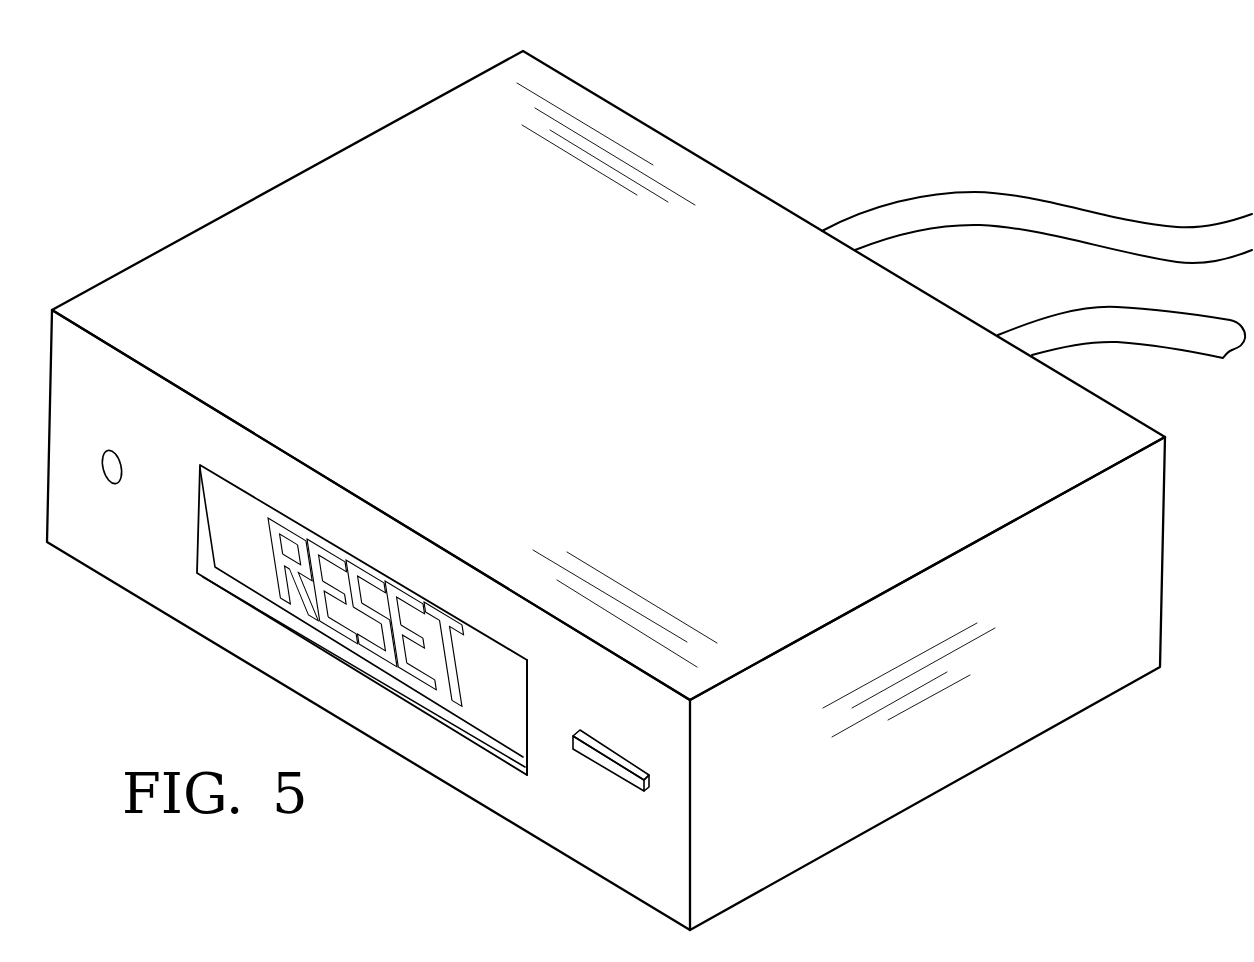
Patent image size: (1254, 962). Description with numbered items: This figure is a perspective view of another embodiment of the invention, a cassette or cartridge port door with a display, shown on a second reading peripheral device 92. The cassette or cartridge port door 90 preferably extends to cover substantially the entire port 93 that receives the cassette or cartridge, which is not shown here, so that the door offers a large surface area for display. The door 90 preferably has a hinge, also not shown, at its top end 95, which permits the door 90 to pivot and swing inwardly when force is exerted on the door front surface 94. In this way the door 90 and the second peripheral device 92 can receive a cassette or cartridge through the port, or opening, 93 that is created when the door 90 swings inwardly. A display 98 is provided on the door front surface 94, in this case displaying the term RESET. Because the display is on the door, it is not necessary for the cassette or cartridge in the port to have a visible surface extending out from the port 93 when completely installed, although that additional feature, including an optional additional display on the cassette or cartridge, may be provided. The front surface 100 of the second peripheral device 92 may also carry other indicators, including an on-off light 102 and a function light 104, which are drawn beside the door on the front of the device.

The cassette or cartridge port door 90 is at (255, 573).
The second reading peripheral device 92 is at (1000, 785).
The port 93 is at (532, 766).
The door front surface 94 is at (260, 552).
The top end 95 is at (235, 485).
The display 98 is at (355, 614).
The front surface 100 is at (610, 701).
The on-off light 102 is at (103, 456).
The function light 104 is at (630, 782).